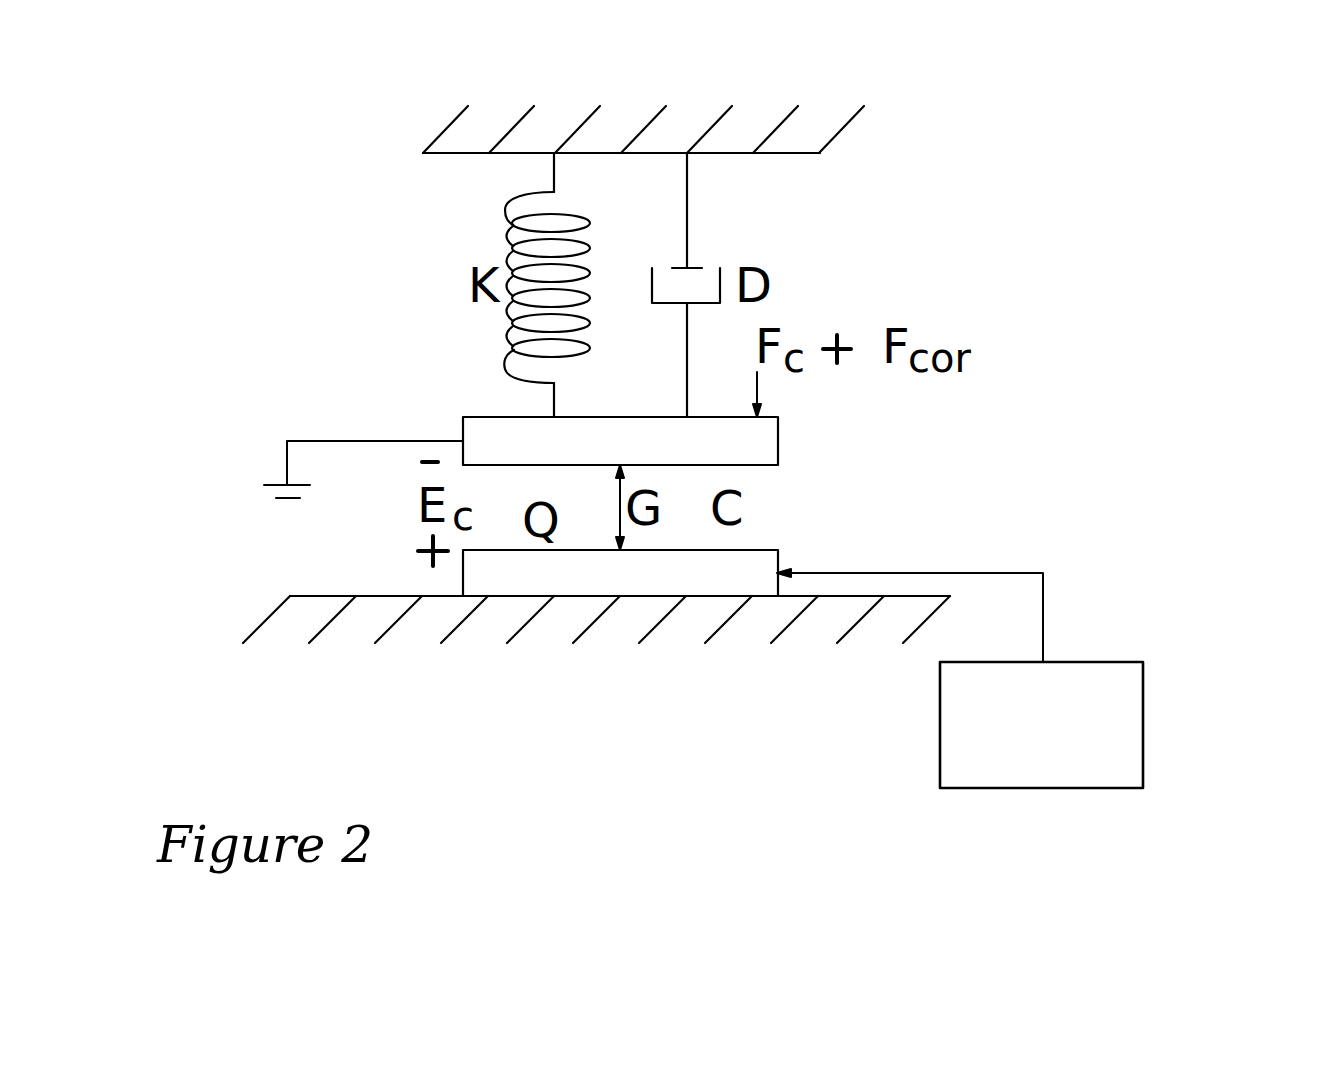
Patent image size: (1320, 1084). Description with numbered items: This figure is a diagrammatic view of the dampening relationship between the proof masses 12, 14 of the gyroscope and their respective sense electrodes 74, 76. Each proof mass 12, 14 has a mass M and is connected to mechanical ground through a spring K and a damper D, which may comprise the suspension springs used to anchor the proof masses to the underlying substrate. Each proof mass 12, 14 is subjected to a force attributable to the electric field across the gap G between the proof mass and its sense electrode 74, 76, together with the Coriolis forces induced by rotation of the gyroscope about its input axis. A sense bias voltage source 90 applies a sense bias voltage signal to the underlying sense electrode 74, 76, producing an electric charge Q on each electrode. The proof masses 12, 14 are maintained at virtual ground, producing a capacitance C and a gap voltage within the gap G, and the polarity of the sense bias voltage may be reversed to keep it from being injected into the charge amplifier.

The proof mass 12 is at (584, 410).
The proof mass 14 is at (478, 427).
The sense electrode 74 is at (620, 624).
The sense electrode 76 is at (650, 573).
The sense bias voltage source 90 is at (1143, 723).